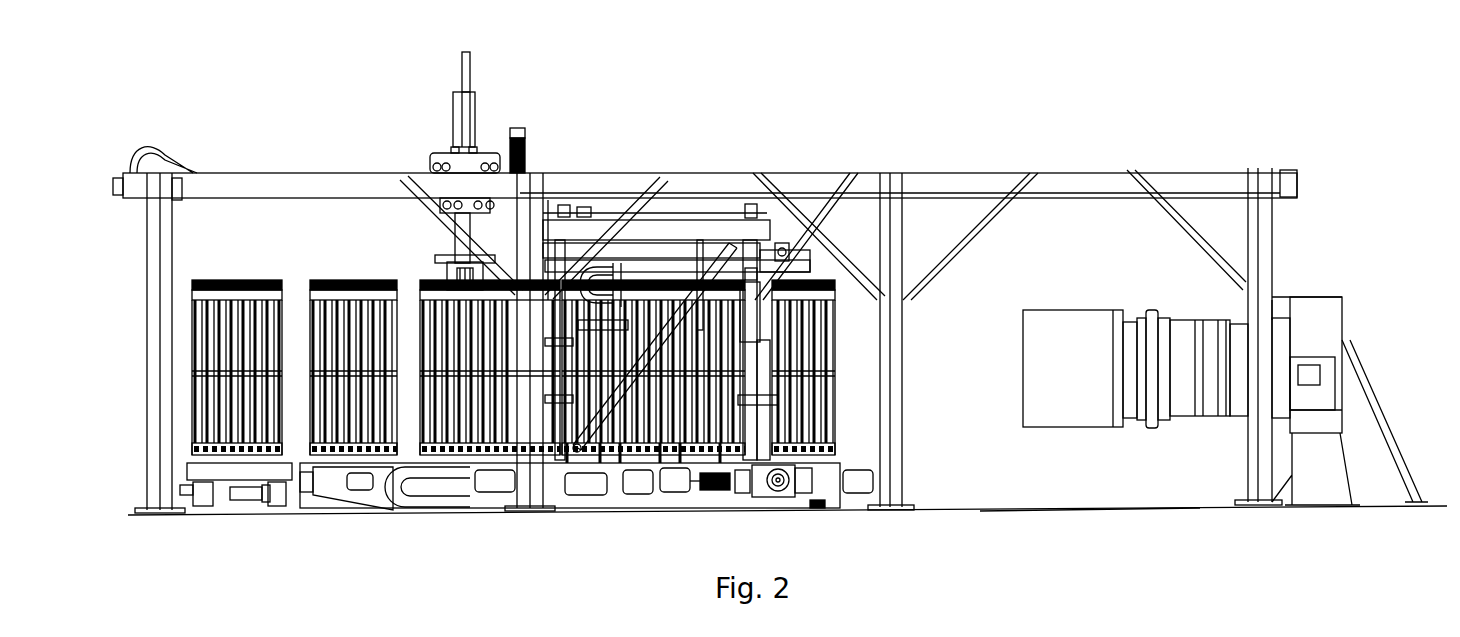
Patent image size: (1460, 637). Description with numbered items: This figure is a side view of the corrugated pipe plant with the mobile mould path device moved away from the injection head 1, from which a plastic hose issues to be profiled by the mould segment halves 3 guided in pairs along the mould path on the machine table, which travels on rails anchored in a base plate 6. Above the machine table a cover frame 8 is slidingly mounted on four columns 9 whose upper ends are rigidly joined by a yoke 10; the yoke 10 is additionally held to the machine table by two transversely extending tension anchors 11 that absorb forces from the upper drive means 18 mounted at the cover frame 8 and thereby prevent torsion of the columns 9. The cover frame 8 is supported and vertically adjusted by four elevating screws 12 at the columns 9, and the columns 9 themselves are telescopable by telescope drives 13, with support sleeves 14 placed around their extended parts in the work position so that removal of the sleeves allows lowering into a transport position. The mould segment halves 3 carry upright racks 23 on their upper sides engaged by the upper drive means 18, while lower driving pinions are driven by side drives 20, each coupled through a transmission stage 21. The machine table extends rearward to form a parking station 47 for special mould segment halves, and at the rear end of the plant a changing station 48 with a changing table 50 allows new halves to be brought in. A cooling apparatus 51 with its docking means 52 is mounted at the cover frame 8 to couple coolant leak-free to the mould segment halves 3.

The injection head 1 is at (1062, 438).
The mould segment halves 3 is at (510, 336).
The base plate 6 is at (1050, 562).
The cover frame 8 is at (673, 253).
The columns 9 is at (547, 322).
The yoke 10 is at (657, 230).
The tension anchors 11 is at (600, 430).
The elevating screws 12 is at (765, 315).
The telescope drives 13 is at (770, 396).
The support sleeves 14 is at (765, 365).
The upper drive means 18 is at (780, 278).
The drives 20 is at (725, 487).
The transmission stage 21 is at (780, 490).
The racks 23 is at (248, 288).
The parking station 47 is at (340, 462).
The changing station 48 is at (235, 497).
The changing table 50 is at (218, 473).
The cooling apparatus 51 is at (603, 260).
The docking means 52 is at (748, 280).